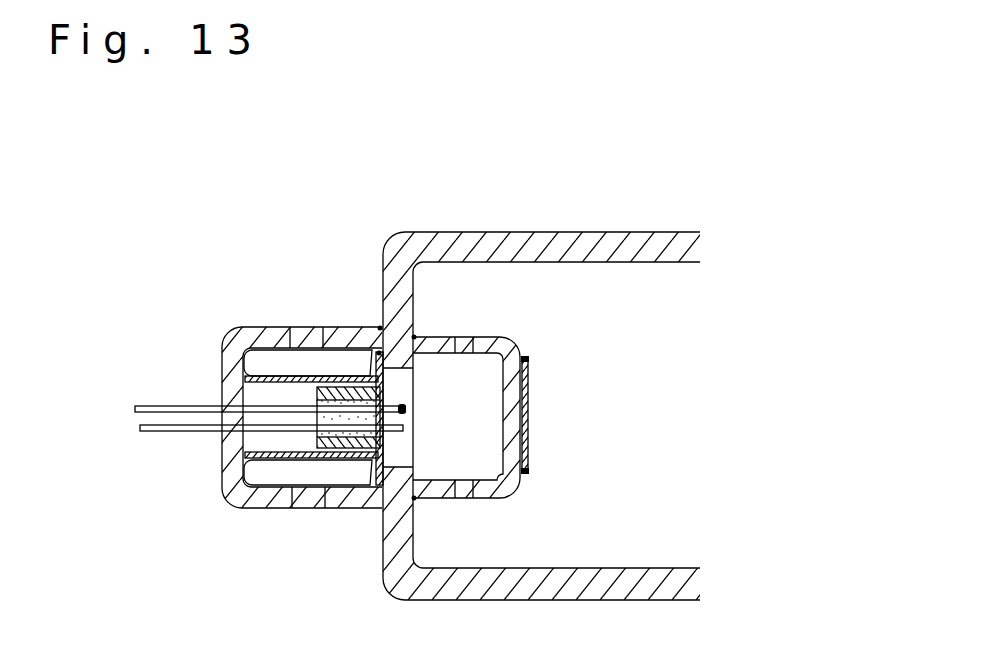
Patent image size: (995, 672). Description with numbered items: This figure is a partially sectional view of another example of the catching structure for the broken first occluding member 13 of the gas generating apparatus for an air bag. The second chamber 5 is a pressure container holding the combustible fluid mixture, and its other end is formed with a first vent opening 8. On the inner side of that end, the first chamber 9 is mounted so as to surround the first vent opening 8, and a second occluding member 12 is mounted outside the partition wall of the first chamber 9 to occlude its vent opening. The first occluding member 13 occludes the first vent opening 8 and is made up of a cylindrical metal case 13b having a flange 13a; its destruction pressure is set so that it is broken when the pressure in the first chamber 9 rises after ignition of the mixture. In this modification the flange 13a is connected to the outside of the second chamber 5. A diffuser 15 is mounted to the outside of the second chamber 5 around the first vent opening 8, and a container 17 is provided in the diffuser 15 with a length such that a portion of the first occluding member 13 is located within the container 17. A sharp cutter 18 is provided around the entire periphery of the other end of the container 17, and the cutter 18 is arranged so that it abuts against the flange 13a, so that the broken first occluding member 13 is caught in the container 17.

The second chamber 5 is at (572, 598).
The first vent opening 8 is at (403, 397).
The first chamber 9 is at (507, 497).
The second occluding member 12 is at (530, 412).
The first occluding member 13 is at (280, 440).
The flange 13a is at (403, 397).
The metal case 13b is at (373, 452).
The diffuser 15 is at (247, 508).
The container 17 is at (265, 368).
The sharp cutter 18 is at (373, 368).